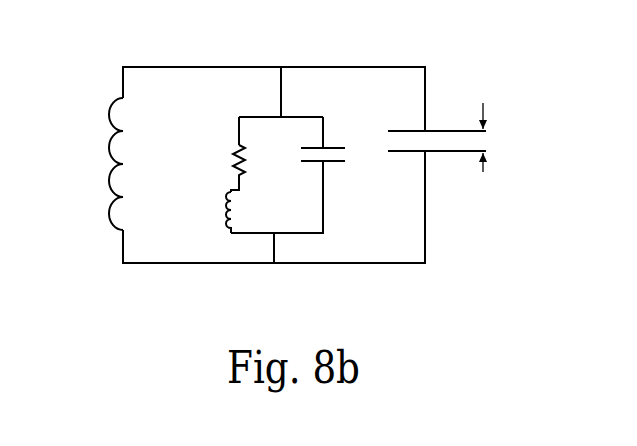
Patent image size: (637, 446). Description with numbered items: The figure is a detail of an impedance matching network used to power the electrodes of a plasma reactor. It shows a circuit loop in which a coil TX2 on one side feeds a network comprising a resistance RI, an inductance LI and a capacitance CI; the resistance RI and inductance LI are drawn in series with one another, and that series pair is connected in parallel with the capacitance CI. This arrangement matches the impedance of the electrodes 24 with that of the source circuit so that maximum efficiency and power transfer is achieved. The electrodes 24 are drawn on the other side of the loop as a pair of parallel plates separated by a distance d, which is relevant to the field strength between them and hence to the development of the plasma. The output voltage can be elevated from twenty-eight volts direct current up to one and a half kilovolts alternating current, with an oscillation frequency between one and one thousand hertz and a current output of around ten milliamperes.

The transmitter coil antenna TX2 is at (97, 97).
The electrodes 24 is at (453, 120).
The resistance RI is at (216, 155).
The inductance LI is at (211, 212).
The capacitance CI is at (331, 174).
The distance d is at (491, 137).